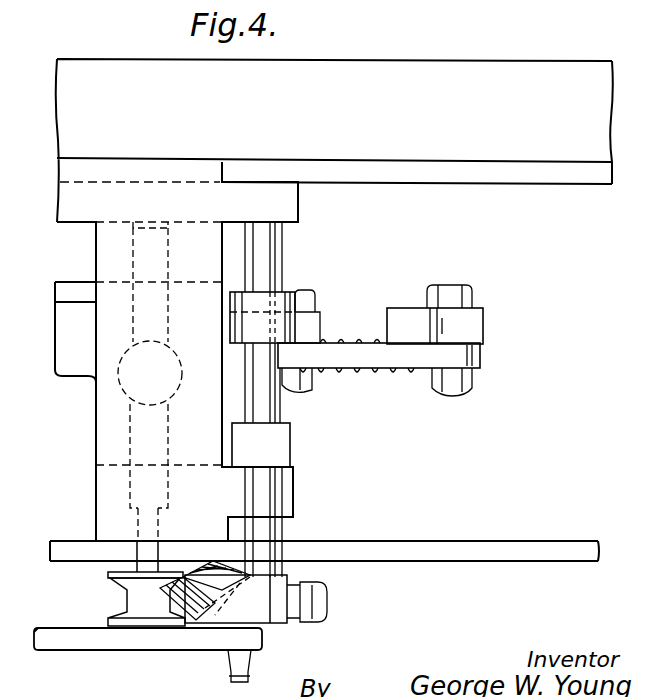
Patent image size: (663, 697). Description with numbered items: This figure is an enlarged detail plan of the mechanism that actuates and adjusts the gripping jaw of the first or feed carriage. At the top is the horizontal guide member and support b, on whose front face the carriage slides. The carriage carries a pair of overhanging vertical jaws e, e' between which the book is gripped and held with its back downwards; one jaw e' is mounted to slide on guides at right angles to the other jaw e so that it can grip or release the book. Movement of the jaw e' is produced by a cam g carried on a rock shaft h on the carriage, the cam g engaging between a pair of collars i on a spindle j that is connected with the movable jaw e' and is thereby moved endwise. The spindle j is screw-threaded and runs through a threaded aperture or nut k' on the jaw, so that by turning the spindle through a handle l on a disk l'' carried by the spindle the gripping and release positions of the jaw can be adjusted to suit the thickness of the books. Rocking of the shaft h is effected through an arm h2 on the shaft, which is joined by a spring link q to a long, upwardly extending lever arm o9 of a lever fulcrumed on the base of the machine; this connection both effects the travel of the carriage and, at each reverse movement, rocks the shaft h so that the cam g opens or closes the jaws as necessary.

The horizontal guide member and support b is at (334, 140).
The jaw e is at (177, 361).
The jaw e' is at (75, 332).
The nut k' is at (117, 386).
The rock shaft h is at (280, 248).
The arm h2 is at (313, 330).
The lever arm o9 is at (468, 330).
The spring link q is at (350, 356).
The spindle j is at (145, 555).
The cam g is at (230, 573).
The collars i is at (130, 612).
The handle l is at (166, 655).
The disk l'' is at (44, 662).